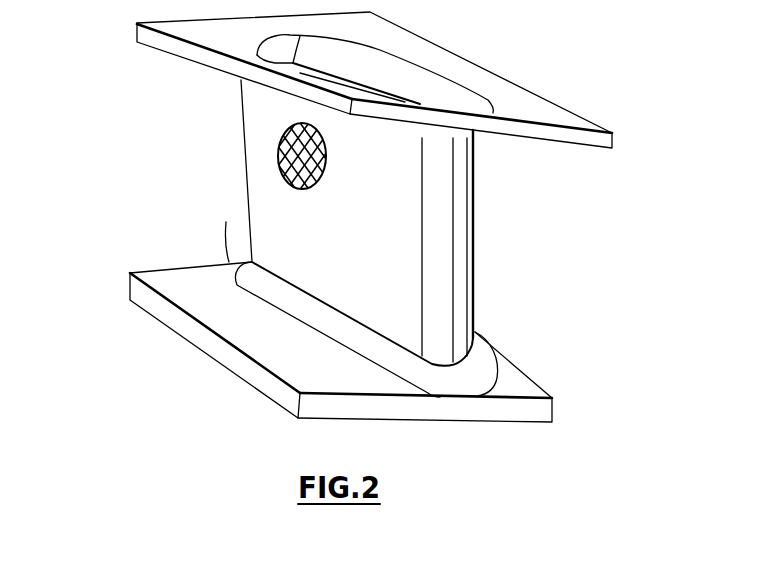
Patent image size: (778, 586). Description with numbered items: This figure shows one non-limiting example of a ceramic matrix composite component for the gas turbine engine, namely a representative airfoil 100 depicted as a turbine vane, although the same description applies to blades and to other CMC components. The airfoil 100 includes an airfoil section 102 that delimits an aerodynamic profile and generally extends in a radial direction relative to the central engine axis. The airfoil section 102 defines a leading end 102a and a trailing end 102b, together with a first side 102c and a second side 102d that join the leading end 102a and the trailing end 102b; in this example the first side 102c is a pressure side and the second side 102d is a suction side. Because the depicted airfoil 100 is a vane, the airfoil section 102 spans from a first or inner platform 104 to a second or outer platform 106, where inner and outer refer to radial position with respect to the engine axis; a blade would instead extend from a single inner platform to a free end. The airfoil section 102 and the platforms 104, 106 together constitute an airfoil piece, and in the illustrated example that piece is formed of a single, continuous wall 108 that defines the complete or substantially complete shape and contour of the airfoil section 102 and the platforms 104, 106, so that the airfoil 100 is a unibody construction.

The airfoil 100 is at (128, 212).
The airfoil section 102 is at (332, 220).
The leading end 102a is at (456, 228).
The trailing end 102b is at (243, 98).
The first side 102c is at (411, 290).
The second side 102d is at (474, 168).
The inner platform 104 is at (554, 407).
The outer platform 106 is at (614, 139).
The continuous wall 108 is at (163, 50).